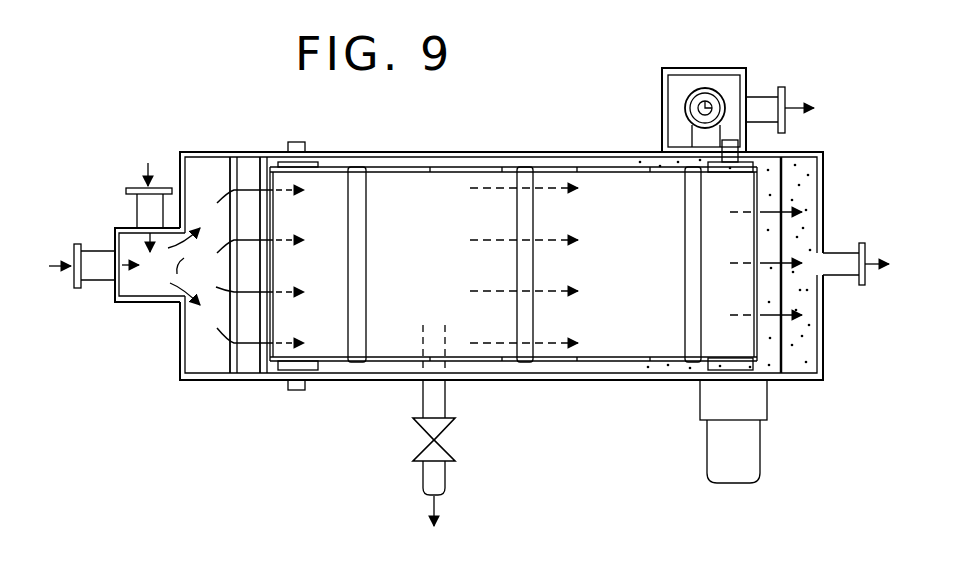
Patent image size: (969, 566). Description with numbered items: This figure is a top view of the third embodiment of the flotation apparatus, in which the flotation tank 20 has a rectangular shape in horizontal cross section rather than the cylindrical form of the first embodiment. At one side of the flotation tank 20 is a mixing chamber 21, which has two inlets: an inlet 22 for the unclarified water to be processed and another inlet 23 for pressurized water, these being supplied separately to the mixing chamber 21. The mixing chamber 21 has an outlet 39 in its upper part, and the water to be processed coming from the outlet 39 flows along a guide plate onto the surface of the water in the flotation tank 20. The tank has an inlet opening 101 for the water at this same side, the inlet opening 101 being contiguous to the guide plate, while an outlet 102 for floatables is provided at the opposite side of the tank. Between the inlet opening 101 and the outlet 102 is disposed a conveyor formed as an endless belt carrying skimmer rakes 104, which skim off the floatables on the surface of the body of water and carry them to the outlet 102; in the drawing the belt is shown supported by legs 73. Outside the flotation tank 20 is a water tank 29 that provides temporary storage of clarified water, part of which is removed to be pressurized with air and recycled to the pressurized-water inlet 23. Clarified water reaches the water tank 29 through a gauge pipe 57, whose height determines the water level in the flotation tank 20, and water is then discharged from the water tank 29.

The flotation tank 20 is at (480, 152).
The mixing chamber 21 is at (115, 238).
The inlet 22 is at (100, 277).
The inlet 23 is at (145, 205).
The water tank 29 is at (682, 75).
The outlet 39 is at (183, 267).
The gauge pipe 57 is at (707, 100).
The legs 73 is at (605, 188).
The inlet opening 101 is at (248, 170).
The outlet 102 is at (763, 170).
The skimmer rakes 104 is at (360, 357).